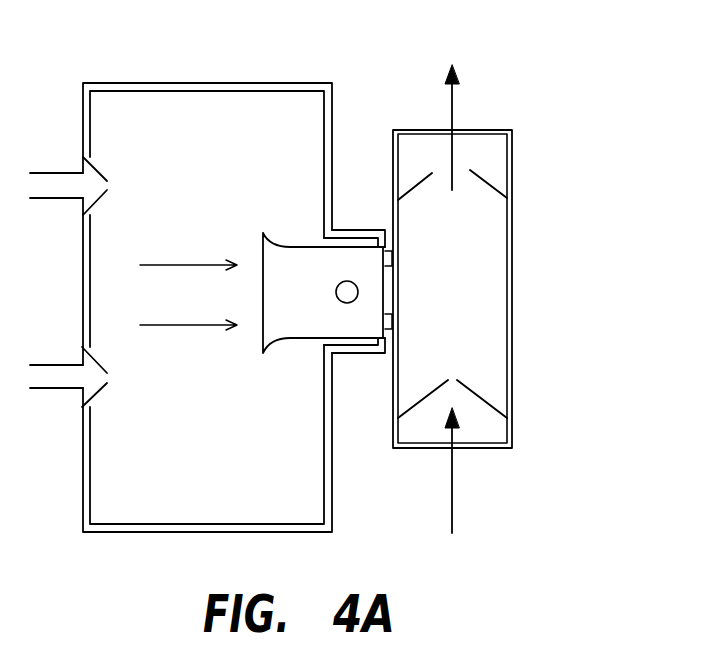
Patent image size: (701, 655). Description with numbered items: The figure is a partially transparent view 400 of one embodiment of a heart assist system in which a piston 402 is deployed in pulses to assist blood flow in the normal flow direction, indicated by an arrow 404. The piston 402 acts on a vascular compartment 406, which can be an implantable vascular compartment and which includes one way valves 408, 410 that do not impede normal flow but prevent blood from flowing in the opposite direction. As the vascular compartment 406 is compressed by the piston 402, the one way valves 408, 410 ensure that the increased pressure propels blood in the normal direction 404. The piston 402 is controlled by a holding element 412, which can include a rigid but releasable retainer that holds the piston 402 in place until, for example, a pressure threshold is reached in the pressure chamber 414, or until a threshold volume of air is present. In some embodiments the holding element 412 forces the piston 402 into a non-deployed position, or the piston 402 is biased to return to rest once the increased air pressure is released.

The partially transparent view 400 is at (498, 53).
The piston 402 is at (293, 340).
The arrow 404 is at (452, 110).
The vascular compartment 406 is at (513, 283).
The one way valve 408 is at (482, 177).
The one way valve 410 is at (477, 395).
The holding element 412 is at (383, 217).
The pressure chamber 414 is at (220, 82).